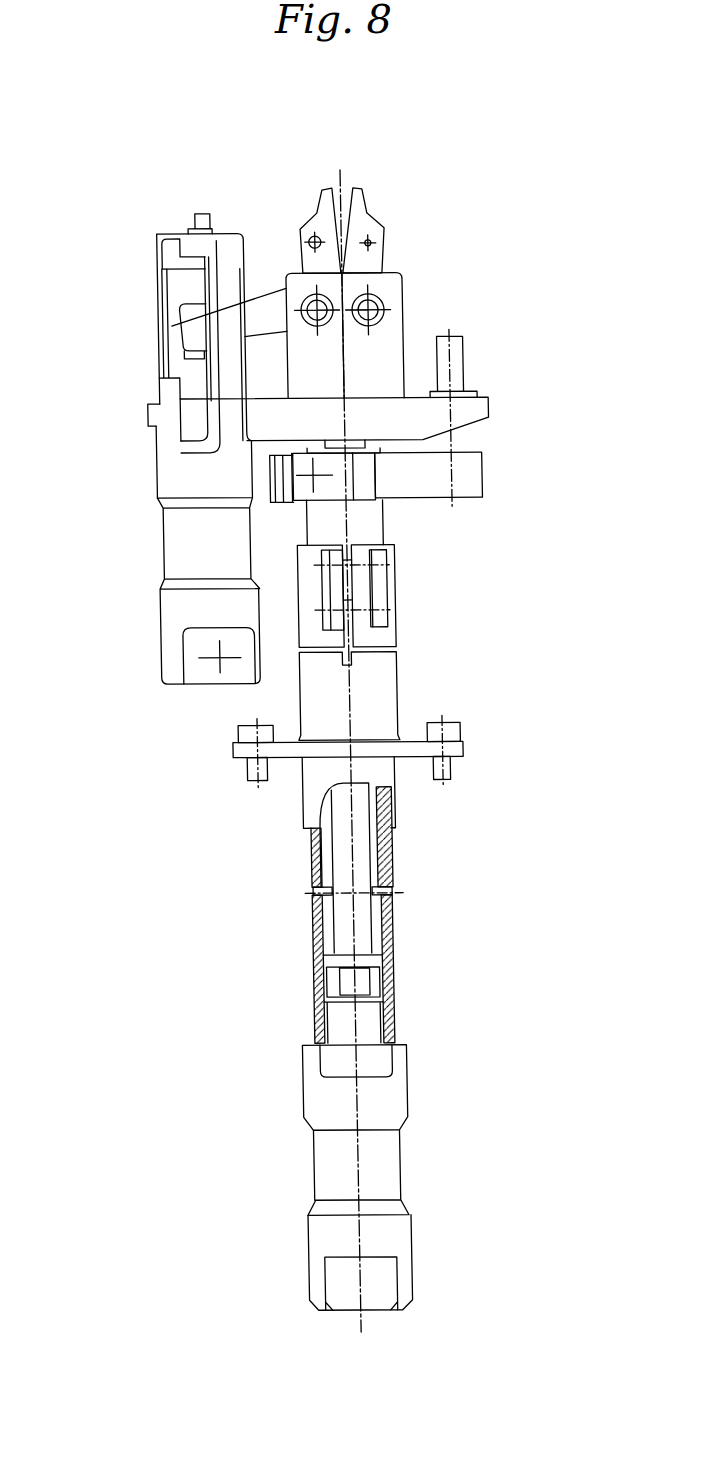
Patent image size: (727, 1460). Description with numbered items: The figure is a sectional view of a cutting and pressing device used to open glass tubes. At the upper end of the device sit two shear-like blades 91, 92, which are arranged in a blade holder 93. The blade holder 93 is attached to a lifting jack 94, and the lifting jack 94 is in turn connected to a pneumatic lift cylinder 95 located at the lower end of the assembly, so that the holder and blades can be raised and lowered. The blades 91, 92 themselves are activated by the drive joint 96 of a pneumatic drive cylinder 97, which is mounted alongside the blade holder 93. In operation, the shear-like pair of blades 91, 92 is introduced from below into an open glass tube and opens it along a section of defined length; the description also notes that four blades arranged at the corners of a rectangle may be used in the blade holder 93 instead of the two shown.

The shear-like blade 91 is at (321, 213).
The shear-like blade 92 is at (362, 207).
The blade holder 93 is at (367, 357).
The lifting jack 94 is at (339, 898).
The pneumatic lift cylinder 95 is at (367, 1178).
The drive joint 96 is at (268, 318).
The pneumatic drive cylinder 97 is at (190, 607).